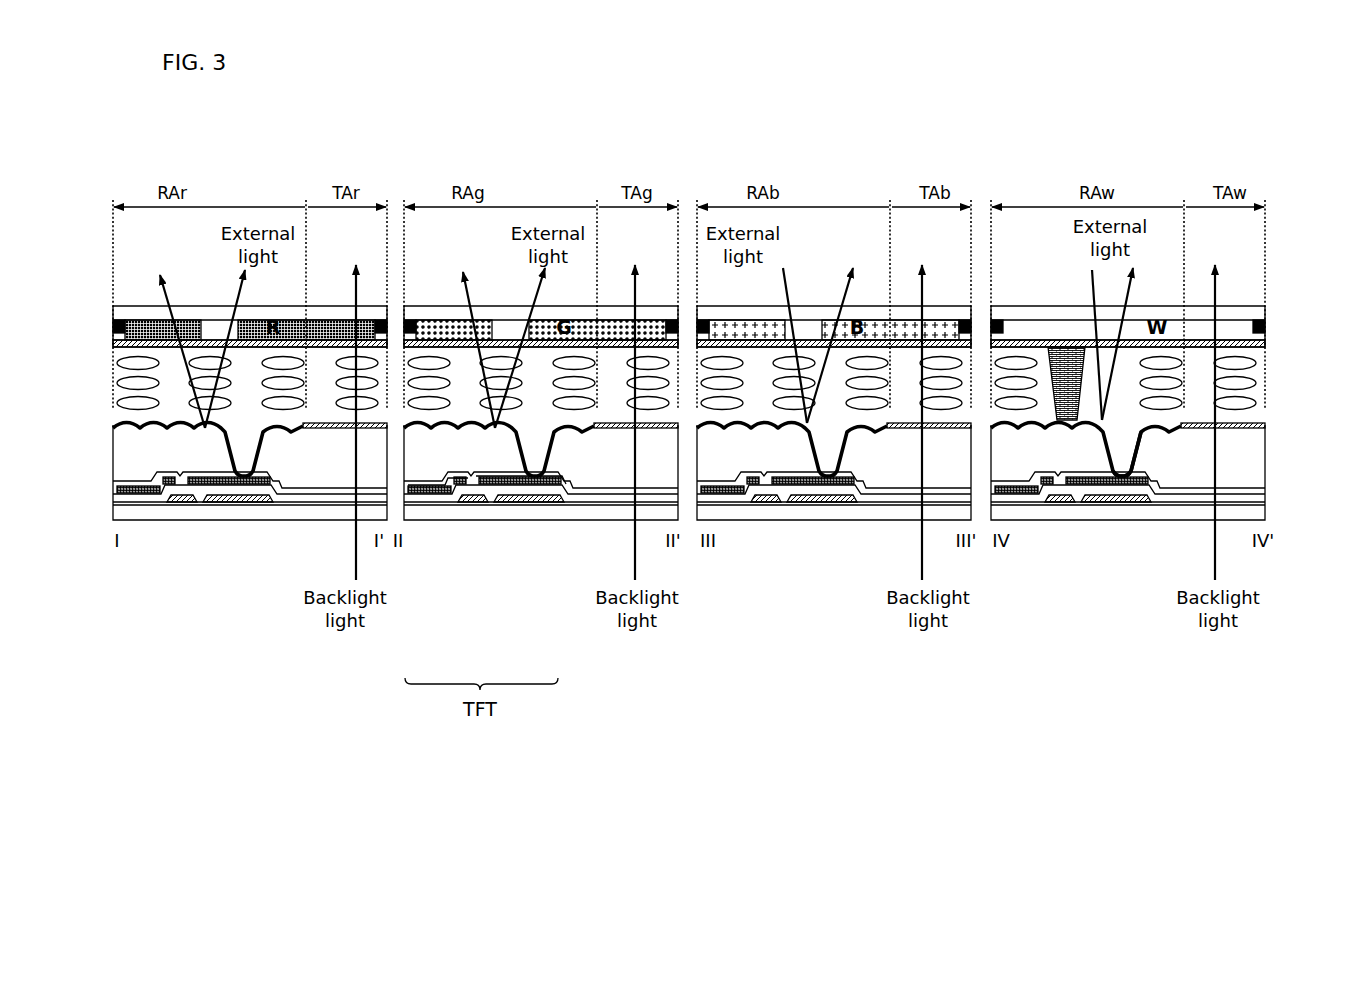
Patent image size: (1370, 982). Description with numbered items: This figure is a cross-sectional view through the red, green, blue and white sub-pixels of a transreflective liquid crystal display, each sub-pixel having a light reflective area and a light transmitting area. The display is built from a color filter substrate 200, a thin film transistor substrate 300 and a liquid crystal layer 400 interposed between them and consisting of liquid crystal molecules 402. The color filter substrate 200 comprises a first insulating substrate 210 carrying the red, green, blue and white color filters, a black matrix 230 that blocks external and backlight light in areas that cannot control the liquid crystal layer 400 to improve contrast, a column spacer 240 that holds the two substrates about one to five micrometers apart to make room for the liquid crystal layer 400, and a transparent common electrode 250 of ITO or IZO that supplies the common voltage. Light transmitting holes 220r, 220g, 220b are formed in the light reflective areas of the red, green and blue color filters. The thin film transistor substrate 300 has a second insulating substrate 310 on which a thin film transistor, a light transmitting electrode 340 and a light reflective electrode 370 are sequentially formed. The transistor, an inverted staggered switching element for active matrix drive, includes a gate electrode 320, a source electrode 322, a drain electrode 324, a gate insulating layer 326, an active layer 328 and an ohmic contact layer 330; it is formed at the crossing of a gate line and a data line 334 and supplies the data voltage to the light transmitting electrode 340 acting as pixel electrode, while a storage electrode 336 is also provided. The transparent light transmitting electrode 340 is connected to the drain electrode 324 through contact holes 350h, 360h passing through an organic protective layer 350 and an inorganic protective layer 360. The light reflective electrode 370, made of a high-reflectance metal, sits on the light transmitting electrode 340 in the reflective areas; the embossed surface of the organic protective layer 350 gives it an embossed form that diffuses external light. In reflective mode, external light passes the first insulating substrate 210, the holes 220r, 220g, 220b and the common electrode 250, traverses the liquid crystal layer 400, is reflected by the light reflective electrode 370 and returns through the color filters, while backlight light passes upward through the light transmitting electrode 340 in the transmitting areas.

The color filter substrate 200 is at (1272, 335).
The first insulating substrate 210 is at (1258, 310).
The light transmitting hole 220r is at (203, 336).
The light transmitting hole 220g is at (500, 335).
The light transmitting hole 220b is at (803, 335).
The black matrix 230 is at (993, 326).
The column spacer 240 is at (1065, 350).
The common electrode 250 is at (337, 343).
The thin film transistor substrate 300 is at (1272, 470).
The second insulating substrate 310 is at (180, 512).
The gate electrode 320 is at (470, 495).
The source electrode 322 is at (453, 485).
The drain electrode 324 is at (520, 486).
The gate insulating layer 326 is at (441, 496).
The active layer 328 is at (493, 491).
The ohmic contact layer 330 is at (416, 490).
The data line 334 is at (410, 494).
The storage electrode 336 is at (542, 480).
The light transmitting electrode 340 is at (905, 424).
The organic protective layer 350 is at (1038, 443).
The contact hole 350h is at (1138, 452).
The inorganic protective layer 360 is at (1060, 445).
The contact hole 360h is at (1140, 447).
The light reflective electrode 370 is at (772, 440).
The liquid crystal layer 400 is at (1272, 378).
The liquid crystal molecules 402 is at (1265, 402).